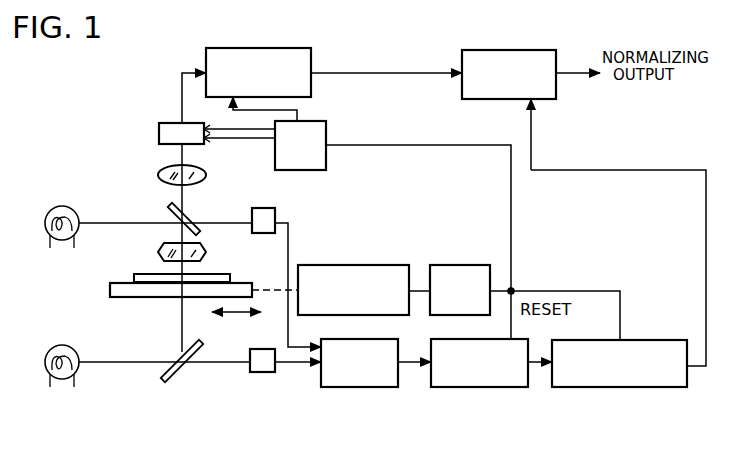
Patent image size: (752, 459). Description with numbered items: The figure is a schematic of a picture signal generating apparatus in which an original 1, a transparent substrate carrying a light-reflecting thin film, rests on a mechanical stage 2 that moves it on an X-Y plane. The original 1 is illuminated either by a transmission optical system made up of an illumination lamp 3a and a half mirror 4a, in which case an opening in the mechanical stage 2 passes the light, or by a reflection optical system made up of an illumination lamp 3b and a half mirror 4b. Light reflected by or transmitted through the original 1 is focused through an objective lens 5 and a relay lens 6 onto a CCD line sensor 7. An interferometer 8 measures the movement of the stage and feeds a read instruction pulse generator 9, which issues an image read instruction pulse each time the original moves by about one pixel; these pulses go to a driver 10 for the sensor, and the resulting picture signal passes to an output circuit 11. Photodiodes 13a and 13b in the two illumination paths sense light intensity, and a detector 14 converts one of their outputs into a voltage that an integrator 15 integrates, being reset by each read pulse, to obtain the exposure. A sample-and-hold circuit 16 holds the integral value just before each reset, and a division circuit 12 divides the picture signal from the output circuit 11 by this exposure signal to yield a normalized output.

The original 1 is at (134, 276).
The mechanical stage 2 is at (110, 292).
The illumination lamp 3a is at (57, 346).
The illumination lamp 3b is at (62, 206).
The half mirror 4a is at (172, 380).
The half mirror 4b is at (170, 207).
The objective lens 5 is at (158, 247).
The relay lens 6 is at (160, 170).
The CCD line sensor 7 is at (160, 124).
The interferometer 8 is at (392, 265).
The read instruction pulse generator 9 is at (480, 265).
The driver 10 is at (275, 160).
The output circuit 11 is at (205, 56).
The division circuit 12 is at (468, 98).
The photodiode 13a is at (262, 373).
The photodiode 13b is at (275, 210).
The detector 14 is at (360, 387).
The integrator 15 is at (497, 387).
The sample-and-hold circuit 16 is at (630, 387).